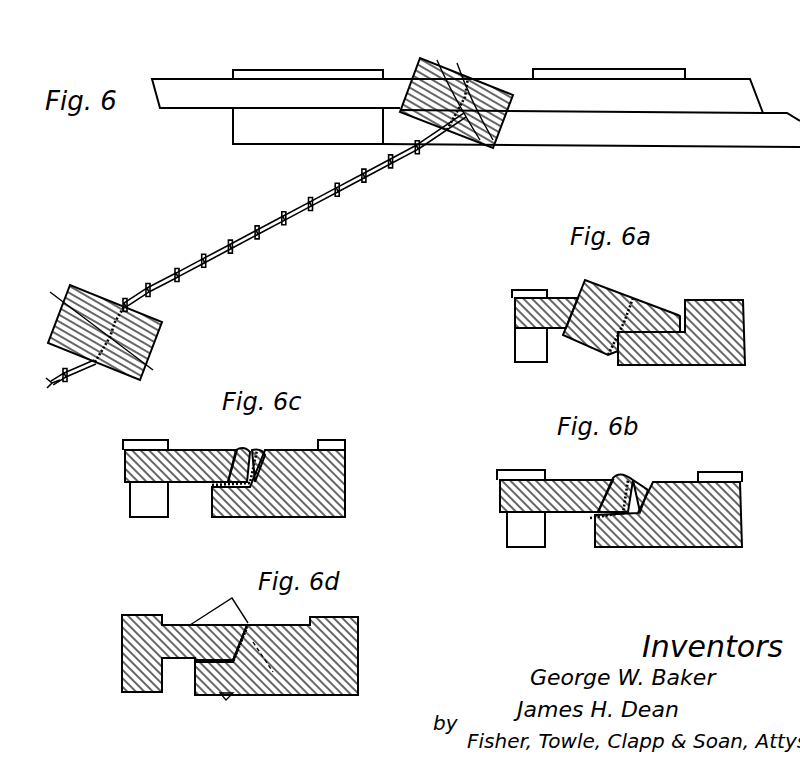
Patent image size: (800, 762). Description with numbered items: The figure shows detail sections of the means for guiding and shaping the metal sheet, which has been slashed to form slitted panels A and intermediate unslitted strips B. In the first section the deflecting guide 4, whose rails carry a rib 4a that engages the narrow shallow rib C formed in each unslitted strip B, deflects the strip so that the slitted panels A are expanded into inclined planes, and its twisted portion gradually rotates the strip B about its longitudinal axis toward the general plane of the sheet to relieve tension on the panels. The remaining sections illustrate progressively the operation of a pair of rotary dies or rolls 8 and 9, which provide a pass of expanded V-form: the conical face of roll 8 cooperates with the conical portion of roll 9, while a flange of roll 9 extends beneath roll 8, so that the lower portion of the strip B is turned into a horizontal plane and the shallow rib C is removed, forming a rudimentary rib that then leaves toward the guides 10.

In FIG. 6, the guide 4 is at (500, 90).
In FIG. 6A, the guide 4 is at (650, 313).
In FIG. 6B, the guide 4 is at (640, 490).
In FIG. 6C, the guide 4 is at (252, 450).
In FIG. 6, the rib of guide 4a is at (433, 48).
In FIG. 6, the roll 8 is at (215, 98).
In FIG. 6A, the roll 8 is at (515, 317).
In FIG. 6B, the roll 8 is at (567, 482).
In FIG. 6C, the roll 8 is at (182, 475).
In FIG. 6D, the roll 8 is at (178, 652).
In FIG. 6, the roll 9 is at (632, 95).
In FIG. 6A, the roll 9 is at (715, 352).
In FIG. 6B, the roll 9 is at (697, 540).
In FIG. 6C, the roll 9 is at (312, 508).
In FIG. 6D, the roll 9 is at (305, 688).
In FIG. 6D, the guide 10 is at (215, 617).
In FIG. 6, the slitted panel A is at (313, 205).
In FIG. 6, the unslitted strip B is at (462, 140).
In FIG. 6A, the unslitted strip B is at (610, 357).
In FIG. 6C, the unslitted strip B is at (210, 487).
In FIG. 6D, the unslitted strip B is at (248, 627).
In FIG. 6, the shallow rib C is at (493, 145).